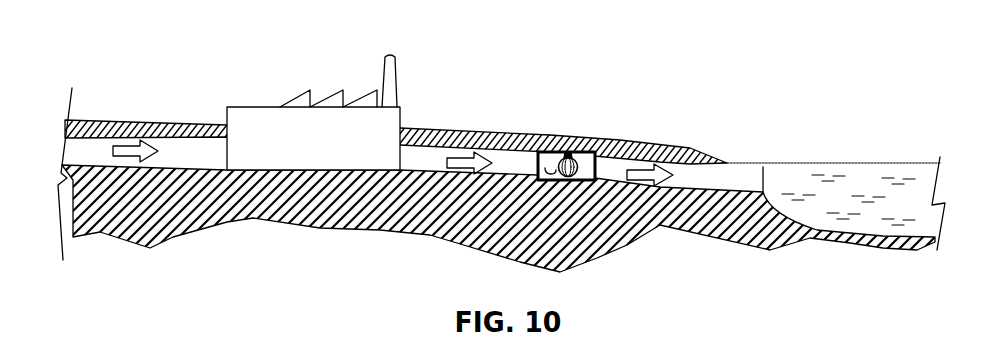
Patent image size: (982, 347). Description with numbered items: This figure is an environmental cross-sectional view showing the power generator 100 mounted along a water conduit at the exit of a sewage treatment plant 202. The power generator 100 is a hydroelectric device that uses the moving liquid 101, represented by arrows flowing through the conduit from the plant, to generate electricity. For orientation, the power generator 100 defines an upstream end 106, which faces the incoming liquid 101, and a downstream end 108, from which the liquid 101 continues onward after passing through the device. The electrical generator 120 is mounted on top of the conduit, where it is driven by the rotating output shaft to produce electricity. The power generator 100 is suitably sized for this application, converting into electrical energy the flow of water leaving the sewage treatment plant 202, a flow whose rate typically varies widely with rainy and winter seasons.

The power generator 100 is at (589, 151).
The liquid 101 is at (487, 130).
The upstream end 106 is at (530, 167).
The downstream end 108 is at (643, 143).
The electrical generator 120 is at (571, 151).
The sewage treatment plant 202 is at (313, 112).